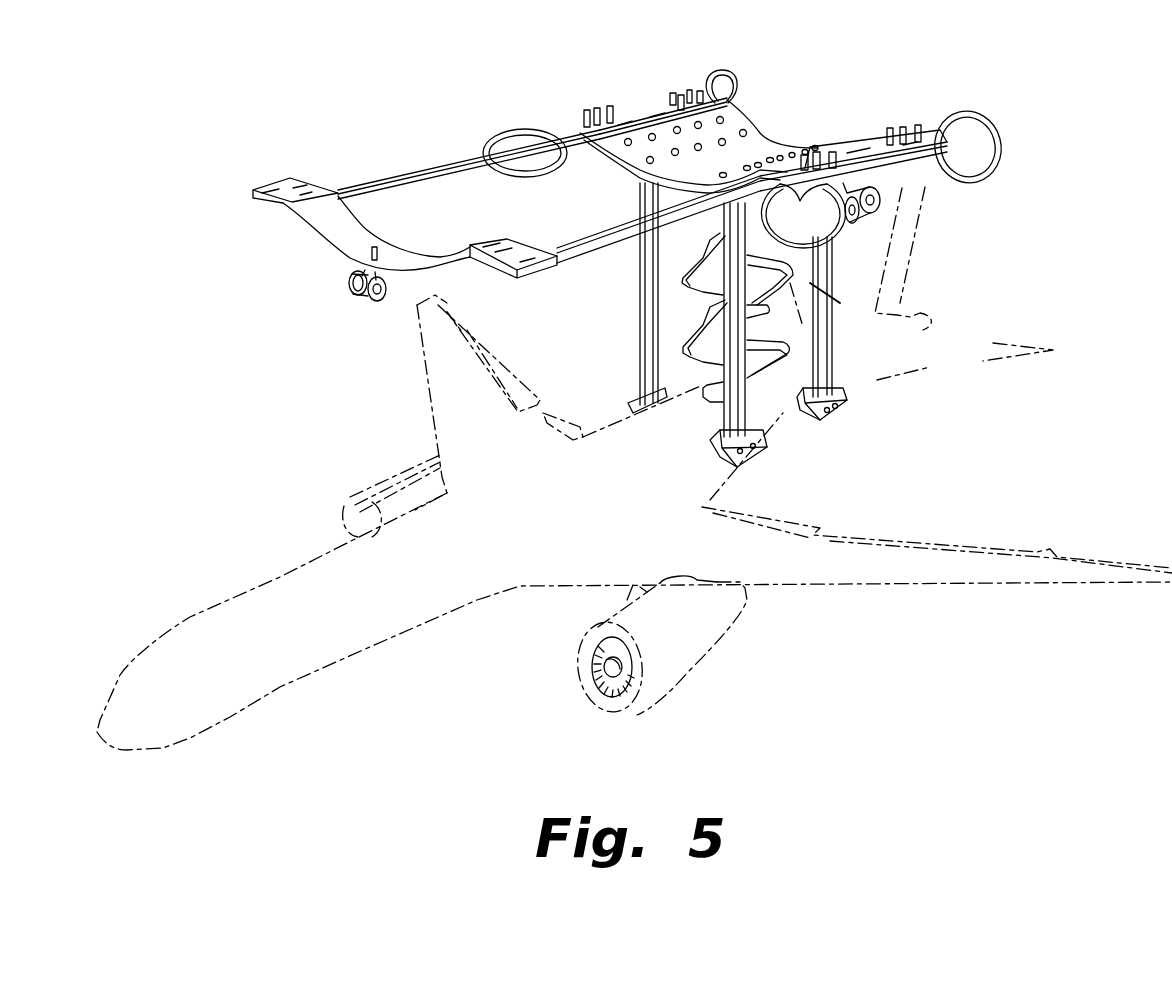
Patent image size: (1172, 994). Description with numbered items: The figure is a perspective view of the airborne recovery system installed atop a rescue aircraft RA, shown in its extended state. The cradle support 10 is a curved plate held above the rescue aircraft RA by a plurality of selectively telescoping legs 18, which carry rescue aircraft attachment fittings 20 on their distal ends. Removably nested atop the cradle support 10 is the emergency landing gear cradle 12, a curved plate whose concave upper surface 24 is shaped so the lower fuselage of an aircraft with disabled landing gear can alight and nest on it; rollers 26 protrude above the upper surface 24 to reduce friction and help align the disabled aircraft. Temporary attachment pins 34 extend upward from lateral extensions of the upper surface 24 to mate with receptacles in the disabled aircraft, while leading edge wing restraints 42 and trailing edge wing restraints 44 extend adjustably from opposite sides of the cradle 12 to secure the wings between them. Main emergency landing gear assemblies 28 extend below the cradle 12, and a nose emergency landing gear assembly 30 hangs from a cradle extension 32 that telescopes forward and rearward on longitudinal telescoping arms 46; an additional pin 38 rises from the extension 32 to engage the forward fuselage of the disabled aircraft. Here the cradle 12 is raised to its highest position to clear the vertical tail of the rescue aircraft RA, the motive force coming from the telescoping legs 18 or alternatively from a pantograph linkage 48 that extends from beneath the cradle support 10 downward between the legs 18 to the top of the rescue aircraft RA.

The cradle support 10 is at (622, 178).
The emergency landing gear cradle 12 is at (635, 108).
The telescoping legs 18 is at (638, 310).
The rescue aircraft attachment fittings 20 is at (628, 405).
The upper surface 24 is at (762, 143).
The rollers 26 is at (676, 152).
The main emergency landing gear assemblies 28 is at (880, 202).
The nose emergency landing gear assembly 30 is at (355, 296).
The cradle extension 32 is at (305, 228).
The pins 34 is at (594, 110).
The pin 38 is at (370, 252).
The leading edge wing restraints 42 is at (494, 126).
The trailing edge wing restraints 44 is at (726, 72).
The telescoping arms 46 is at (384, 166).
The pantograph linkage 48 is at (692, 287).
The rescue aircraft RA is at (323, 672).